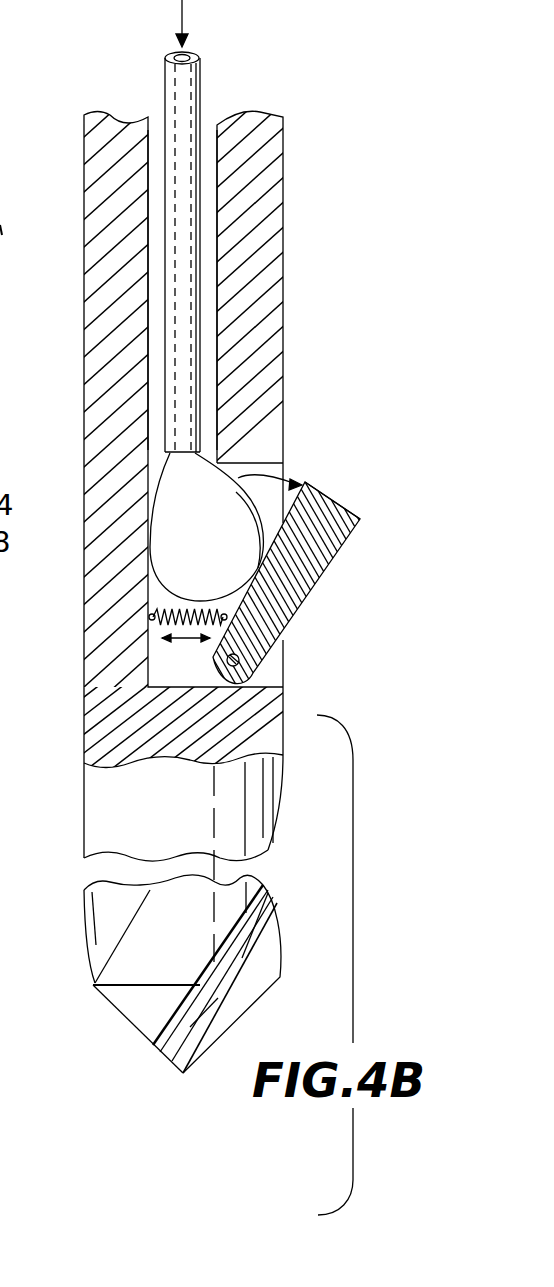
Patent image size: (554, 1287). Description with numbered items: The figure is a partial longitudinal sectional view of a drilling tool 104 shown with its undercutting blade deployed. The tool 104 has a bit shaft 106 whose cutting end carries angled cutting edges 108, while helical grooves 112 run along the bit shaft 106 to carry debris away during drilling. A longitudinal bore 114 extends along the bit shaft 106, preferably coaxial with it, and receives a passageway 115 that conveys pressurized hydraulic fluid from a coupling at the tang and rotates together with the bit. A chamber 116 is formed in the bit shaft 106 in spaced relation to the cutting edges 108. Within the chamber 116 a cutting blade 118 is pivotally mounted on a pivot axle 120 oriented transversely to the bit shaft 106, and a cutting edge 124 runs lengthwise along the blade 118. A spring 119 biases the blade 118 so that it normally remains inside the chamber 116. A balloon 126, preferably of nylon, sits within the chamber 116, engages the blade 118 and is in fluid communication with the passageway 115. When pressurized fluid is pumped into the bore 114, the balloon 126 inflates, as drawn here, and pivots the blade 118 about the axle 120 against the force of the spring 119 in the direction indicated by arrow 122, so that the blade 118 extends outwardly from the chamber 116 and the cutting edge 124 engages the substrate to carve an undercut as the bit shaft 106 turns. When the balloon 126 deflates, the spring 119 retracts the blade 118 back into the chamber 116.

The tool 104 is at (334, 308).
The bit shaft 106 is at (283, 175).
The angled cutting edges 108 is at (258, 1003).
The helical grooves 112 is at (274, 937).
The longitudinal bore 114 is at (160, 342).
The passageway 115 is at (200, 88).
The chamber 116 is at (273, 678).
The cutting blade 118 is at (300, 573).
The spring 119 is at (158, 636).
The pivot axle 120 is at (238, 660).
The arrow 122 is at (263, 473).
The cutting edge 124 is at (345, 543).
The balloon 126 is at (228, 548).